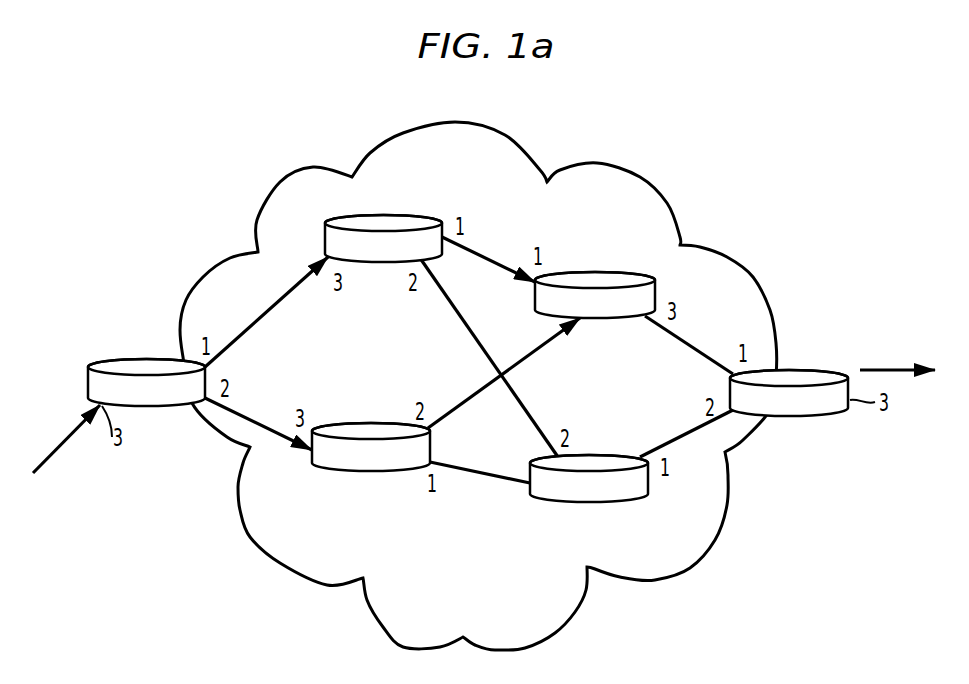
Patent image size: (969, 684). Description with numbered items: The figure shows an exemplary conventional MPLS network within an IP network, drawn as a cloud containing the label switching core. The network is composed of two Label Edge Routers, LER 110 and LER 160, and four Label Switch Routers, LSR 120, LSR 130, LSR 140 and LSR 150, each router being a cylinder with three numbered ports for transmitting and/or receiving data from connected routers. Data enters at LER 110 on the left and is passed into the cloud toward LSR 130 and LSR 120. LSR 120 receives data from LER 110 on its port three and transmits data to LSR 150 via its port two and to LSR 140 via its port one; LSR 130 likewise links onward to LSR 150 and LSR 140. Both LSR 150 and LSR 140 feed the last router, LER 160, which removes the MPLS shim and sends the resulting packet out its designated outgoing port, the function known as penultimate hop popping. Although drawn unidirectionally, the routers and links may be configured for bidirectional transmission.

The Label Edge Router 110 is at (118, 362).
The Label Switch Router 120 is at (325, 468).
The Label Switch Router 130 is at (408, 214).
The Label Switch Router 140 is at (628, 500).
The Label Switch Router 150 is at (599, 272).
The Label Edge Router 160 is at (825, 378).